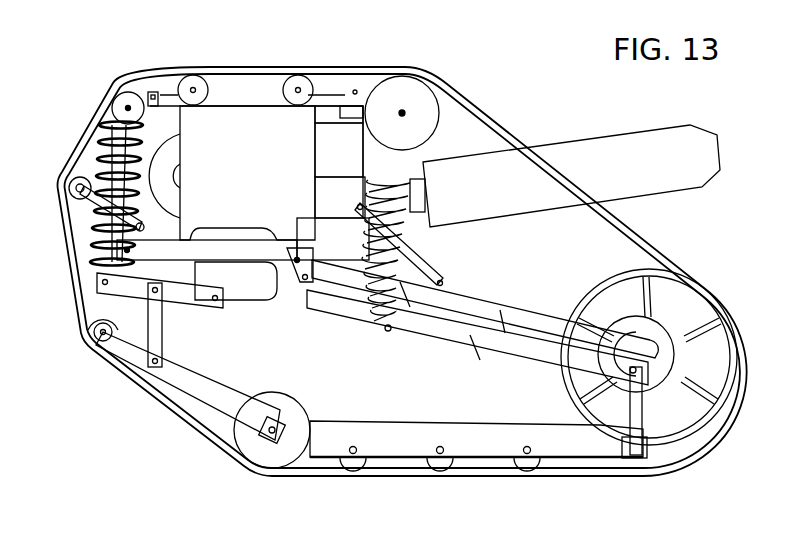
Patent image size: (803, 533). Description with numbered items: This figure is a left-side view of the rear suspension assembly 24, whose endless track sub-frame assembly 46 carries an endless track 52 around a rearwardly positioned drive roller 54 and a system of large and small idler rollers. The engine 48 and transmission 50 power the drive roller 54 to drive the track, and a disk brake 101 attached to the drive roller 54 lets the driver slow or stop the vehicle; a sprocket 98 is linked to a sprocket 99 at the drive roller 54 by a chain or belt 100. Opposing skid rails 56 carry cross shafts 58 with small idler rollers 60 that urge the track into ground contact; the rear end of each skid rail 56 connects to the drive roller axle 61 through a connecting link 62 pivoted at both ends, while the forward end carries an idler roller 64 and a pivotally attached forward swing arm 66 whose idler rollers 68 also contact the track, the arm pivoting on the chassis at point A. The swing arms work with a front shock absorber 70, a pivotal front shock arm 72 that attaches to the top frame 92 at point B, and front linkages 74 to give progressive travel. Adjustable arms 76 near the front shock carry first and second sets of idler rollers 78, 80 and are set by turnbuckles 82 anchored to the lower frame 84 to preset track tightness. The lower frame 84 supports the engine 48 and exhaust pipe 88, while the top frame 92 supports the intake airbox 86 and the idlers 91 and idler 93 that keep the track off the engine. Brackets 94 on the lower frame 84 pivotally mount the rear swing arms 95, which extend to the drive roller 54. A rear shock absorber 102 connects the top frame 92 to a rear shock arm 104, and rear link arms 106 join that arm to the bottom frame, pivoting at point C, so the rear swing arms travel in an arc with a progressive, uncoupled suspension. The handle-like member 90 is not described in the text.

The rear suspension assembly 24 is at (571, 104).
The endless track sub-frame assembly 46 is at (612, 260).
The engine 48 is at (247, 173).
The transmission 50 is at (236, 281).
The endless track 52 is at (493, 127).
The drive roller 54 is at (460, 355).
The skid rails 56 is at (407, 421).
The cross shafts 58 is at (523, 450).
The idler rollers 60 is at (440, 467).
The drive roller axle 61 is at (636, 374).
The connecting link 62 is at (641, 430).
The idler roller 64 is at (261, 474).
The forward swing arm 66 is at (207, 410).
The idler rollers 68 is at (82, 340).
The front shock absorber 70 is at (92, 263).
The front shock arm 72 is at (83, 292).
The front linkages 74 is at (170, 292).
The adjustable arms 76 is at (90, 153).
The first set of idler rollers 78 is at (72, 181).
The second set of idler rollers 80 is at (110, 108).
The turnbuckles 82 is at (92, 230).
The lower frame 84 is at (187, 239).
The intake airbox 86 is at (339, 141).
The exhaust pipe 88 is at (161, 176).
The handle 90 is at (571, 176).
The idlers 91 is at (298, 66).
The top frame 92 is at (230, 107).
The idler 93 is at (440, 100).
The brackets 94 is at (303, 252).
The rear swing arms 95 is at (513, 363).
The sprocket 98 is at (292, 282).
The sprocket 99 is at (730, 360).
The chain or belt 100 is at (503, 300).
The disk brake 101 is at (660, 287).
The rear shock absorber 102 is at (430, 225).
The rear shock arm 104 is at (420, 322).
The rear link arms 106 is at (427, 257).
The pivot point A is at (103, 360).
The pivot point B is at (223, 337).
The pivot point C is at (362, 207).